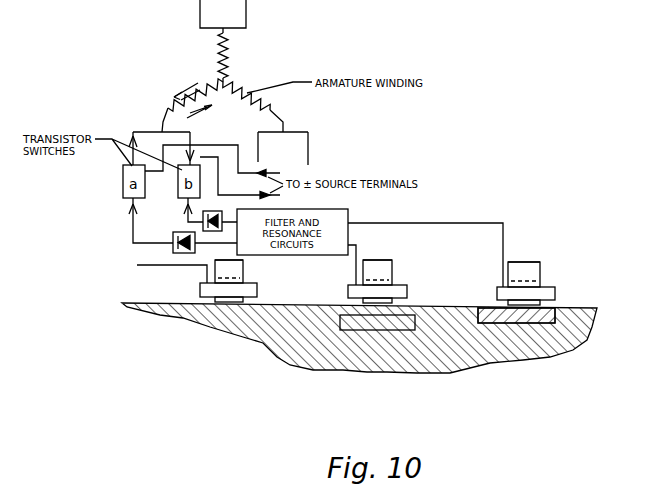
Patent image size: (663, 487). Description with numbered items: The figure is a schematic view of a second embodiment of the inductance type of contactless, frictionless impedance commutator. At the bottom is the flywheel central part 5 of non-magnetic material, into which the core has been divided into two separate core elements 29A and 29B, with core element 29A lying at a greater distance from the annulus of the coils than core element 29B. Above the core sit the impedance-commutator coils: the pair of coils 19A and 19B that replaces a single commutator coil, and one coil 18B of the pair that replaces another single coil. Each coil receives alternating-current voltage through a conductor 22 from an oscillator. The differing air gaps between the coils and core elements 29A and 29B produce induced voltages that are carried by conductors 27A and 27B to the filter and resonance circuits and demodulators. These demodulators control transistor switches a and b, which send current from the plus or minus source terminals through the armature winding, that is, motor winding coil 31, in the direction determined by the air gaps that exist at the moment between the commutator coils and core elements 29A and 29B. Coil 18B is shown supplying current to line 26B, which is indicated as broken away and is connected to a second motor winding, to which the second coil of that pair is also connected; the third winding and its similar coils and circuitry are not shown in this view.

The motor winding coil 31 is at (168, 113).
The line 26B is at (165, 265).
The conductor 27A is at (360, 247).
The conductor 27B is at (505, 243).
The coil 18B is at (258, 290).
The coil 19A is at (408, 293).
The coil 19B is at (555, 293).
The conductor 22 is at (253, 280).
The core element 29A is at (288, 363).
The core element 29B is at (537, 325).
The flywheel central part 5 is at (372, 365).